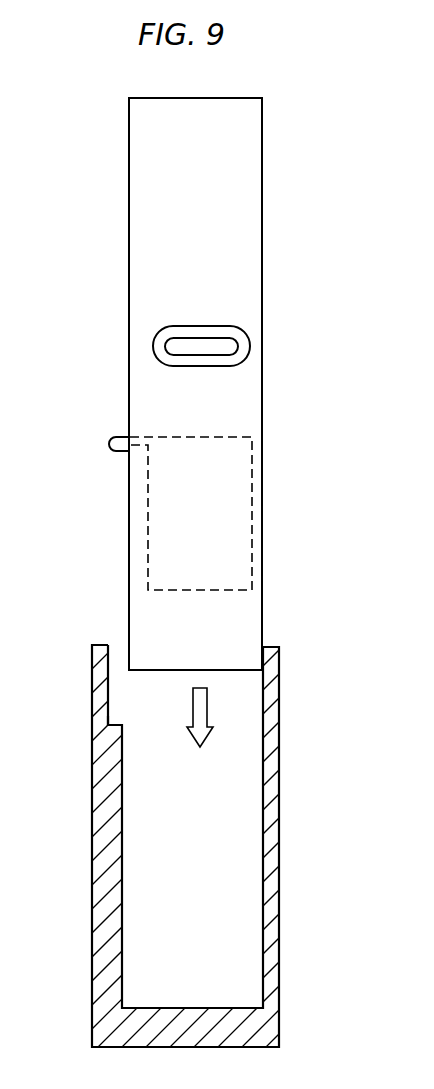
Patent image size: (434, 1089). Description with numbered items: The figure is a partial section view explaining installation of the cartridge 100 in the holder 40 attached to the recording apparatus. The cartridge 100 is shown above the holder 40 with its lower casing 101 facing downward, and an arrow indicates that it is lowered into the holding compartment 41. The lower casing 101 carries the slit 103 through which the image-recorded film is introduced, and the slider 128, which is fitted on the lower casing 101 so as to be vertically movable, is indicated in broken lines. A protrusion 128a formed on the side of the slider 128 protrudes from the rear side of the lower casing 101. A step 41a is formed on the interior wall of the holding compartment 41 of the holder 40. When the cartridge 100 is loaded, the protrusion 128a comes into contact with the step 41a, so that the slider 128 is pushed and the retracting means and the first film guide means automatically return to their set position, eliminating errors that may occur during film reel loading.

The cartridge 100 is at (229, 381).
The lower casing 101 is at (252, 242).
The slit 103 is at (233, 342).
The slider 128 is at (235, 503).
The protrusion 128a is at (113, 439).
The holder 40 is at (279, 927).
The holding compartment 41 is at (247, 835).
The step 41a is at (108, 725).